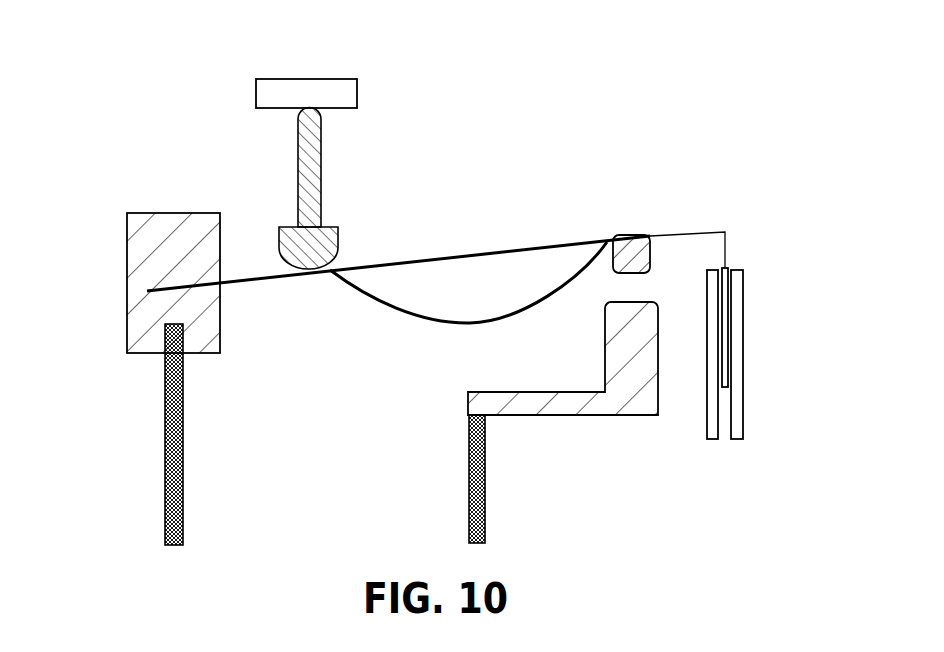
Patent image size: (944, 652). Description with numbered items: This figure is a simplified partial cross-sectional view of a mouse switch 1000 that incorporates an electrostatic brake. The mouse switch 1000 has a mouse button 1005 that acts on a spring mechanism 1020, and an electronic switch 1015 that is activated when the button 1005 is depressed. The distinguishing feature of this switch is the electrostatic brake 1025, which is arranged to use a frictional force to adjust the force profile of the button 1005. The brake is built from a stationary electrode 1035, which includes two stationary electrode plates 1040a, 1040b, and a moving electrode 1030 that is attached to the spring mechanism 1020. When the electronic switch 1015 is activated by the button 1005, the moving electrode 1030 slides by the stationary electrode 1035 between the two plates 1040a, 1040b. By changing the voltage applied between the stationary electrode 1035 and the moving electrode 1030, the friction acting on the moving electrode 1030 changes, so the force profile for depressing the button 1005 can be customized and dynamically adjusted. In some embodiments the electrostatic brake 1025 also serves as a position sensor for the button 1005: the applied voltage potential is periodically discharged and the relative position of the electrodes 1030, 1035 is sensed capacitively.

The mouse switch 1000 is at (148, 141).
The mouse button 1005 is at (305, 78).
The electronic switch 1015 is at (636, 209).
The spring mechanism 1020 is at (432, 260).
The electrostatic brake 1025 is at (758, 358).
The moving electrode 1030 is at (726, 337).
The stationary electrode 1035 is at (735, 405).
The stationary electrode plate 1040a is at (713, 442).
The stationary electrode plate 1040b is at (740, 442).